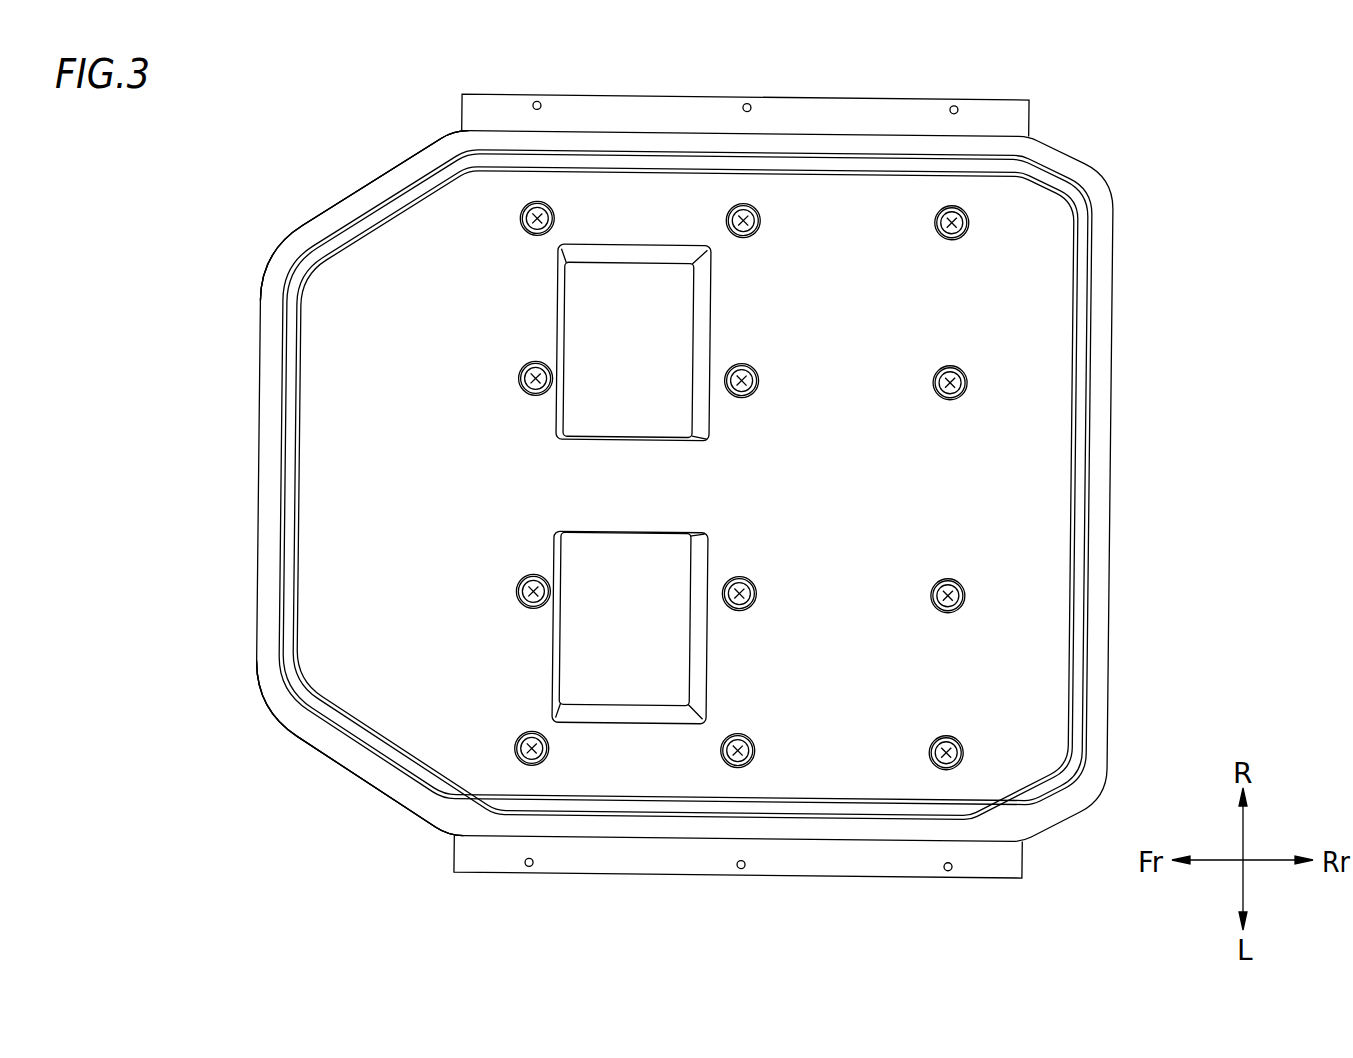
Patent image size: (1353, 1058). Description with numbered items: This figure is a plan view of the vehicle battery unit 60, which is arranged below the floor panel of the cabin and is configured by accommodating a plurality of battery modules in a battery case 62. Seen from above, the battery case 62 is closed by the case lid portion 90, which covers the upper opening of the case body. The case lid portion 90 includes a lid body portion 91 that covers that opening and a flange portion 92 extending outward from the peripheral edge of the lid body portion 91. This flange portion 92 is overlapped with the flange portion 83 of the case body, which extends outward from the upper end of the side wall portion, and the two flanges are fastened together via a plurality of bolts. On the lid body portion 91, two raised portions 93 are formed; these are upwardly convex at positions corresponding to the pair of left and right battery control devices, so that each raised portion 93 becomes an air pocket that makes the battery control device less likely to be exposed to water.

The battery unit 60 is at (1145, 163).
The battery case 62 is at (1112, 478).
The flange portion 83 is at (362, 495).
The case lid portion 90 is at (759, 485).
The lid body portion 91 is at (1025, 341).
The flange portion 92 is at (385, 177).
The raised portion 93 is at (637, 313).